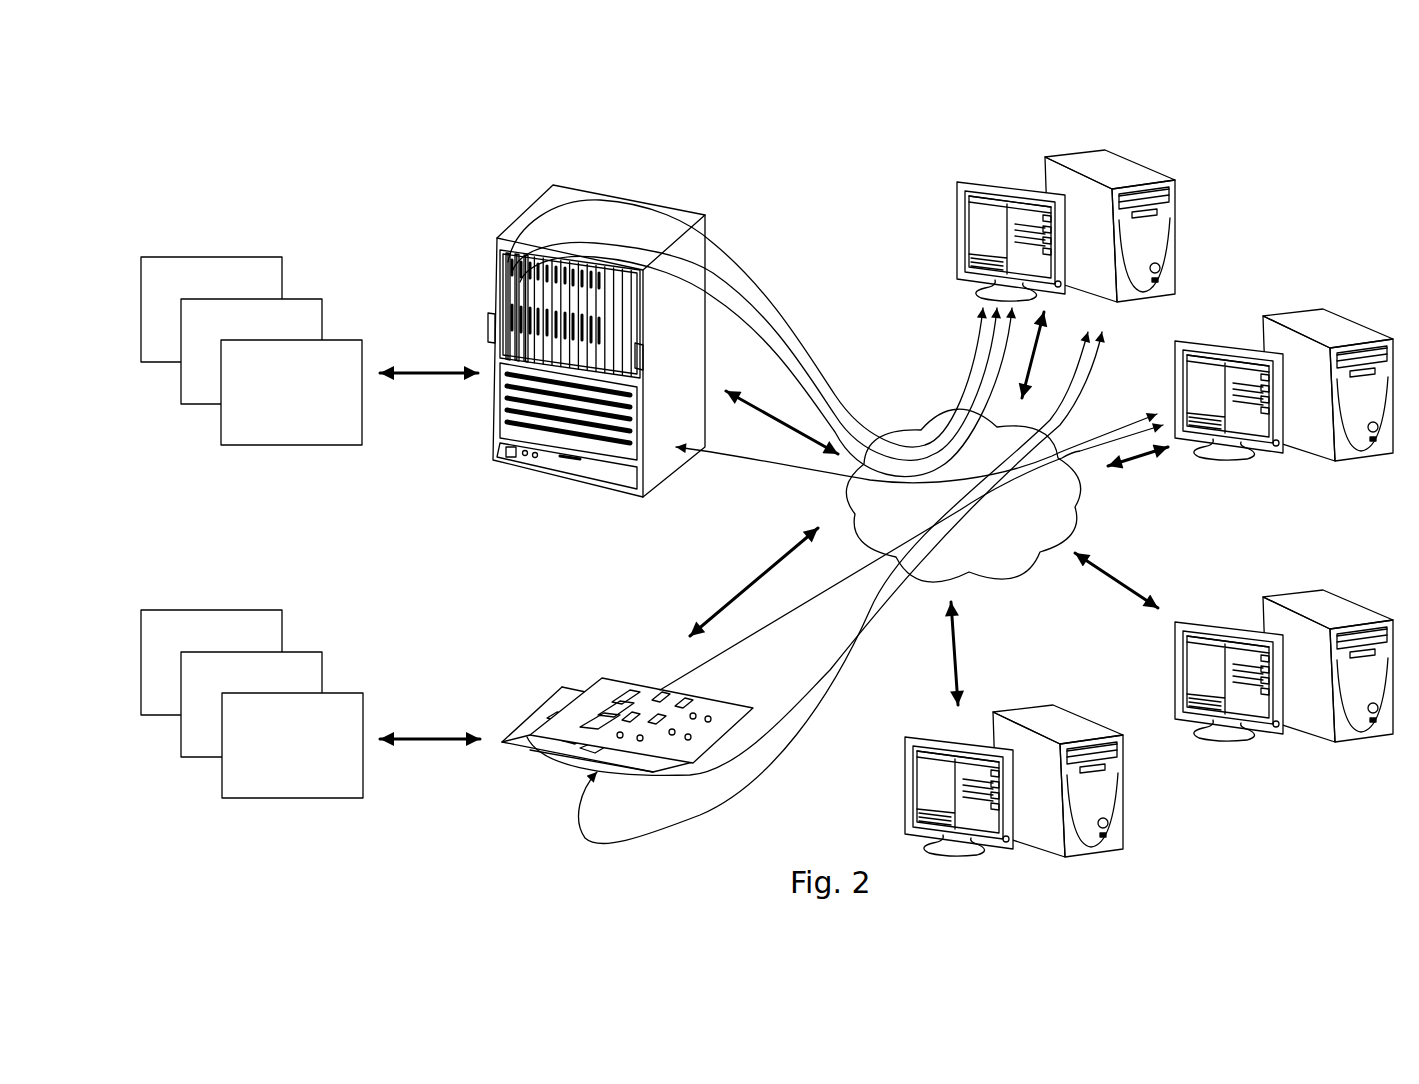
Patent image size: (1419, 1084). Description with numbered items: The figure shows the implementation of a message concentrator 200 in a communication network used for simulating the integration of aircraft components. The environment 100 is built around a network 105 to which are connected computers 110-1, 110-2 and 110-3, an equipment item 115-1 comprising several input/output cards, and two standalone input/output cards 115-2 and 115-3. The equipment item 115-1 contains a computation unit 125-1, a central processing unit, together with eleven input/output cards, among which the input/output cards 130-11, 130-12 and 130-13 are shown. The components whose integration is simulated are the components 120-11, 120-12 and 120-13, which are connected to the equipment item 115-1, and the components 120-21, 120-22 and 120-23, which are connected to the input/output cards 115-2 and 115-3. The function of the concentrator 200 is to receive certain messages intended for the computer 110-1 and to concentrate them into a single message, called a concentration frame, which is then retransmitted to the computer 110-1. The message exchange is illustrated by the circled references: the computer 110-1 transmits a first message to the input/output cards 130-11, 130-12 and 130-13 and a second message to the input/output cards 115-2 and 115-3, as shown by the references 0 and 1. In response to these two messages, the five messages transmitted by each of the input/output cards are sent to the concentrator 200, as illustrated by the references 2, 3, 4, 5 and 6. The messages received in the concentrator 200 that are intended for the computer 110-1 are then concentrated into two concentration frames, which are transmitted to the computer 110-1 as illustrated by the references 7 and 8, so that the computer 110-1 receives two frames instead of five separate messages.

The environment 100 is at (404, 180).
The network 105 is at (922, 513).
The computer 110-1 is at (1370, 293).
The computer 110-2 is at (1360, 575).
The computer 110-3 is at (1055, 835).
The equipment item 115-1 is at (541, 318).
The input/output card 115-2 is at (622, 677).
The input/output card 115-3 is at (545, 690).
The component 120-11 is at (229, 289).
The component 120-12 is at (269, 331).
The component 120-13 is at (309, 372).
The component 120-21 is at (229, 642).
The component 120-22 is at (269, 684).
The component 120-23 is at (310, 725).
The computation unit 125-1 is at (510, 295).
The input/output card 130-11 is at (505, 254).
The input/output card 130-12 is at (512, 265).
The input/output card 130-13 is at (453, 308).
The message concentrator 200 is at (1152, 133).
The first message 0 is at (916, 451).
The second message 1 is at (814, 588).
The input/output card message 2 is at (774, 395).
The input/output card message 3 is at (752, 330).
The input/output card message 4 is at (766, 352).
The input/output card message 5 is at (911, 559).
The input/output card message 6 is at (754, 582).
The concentration frame 7 is at (1118, 405).
The concentration frame 8 is at (1125, 335).